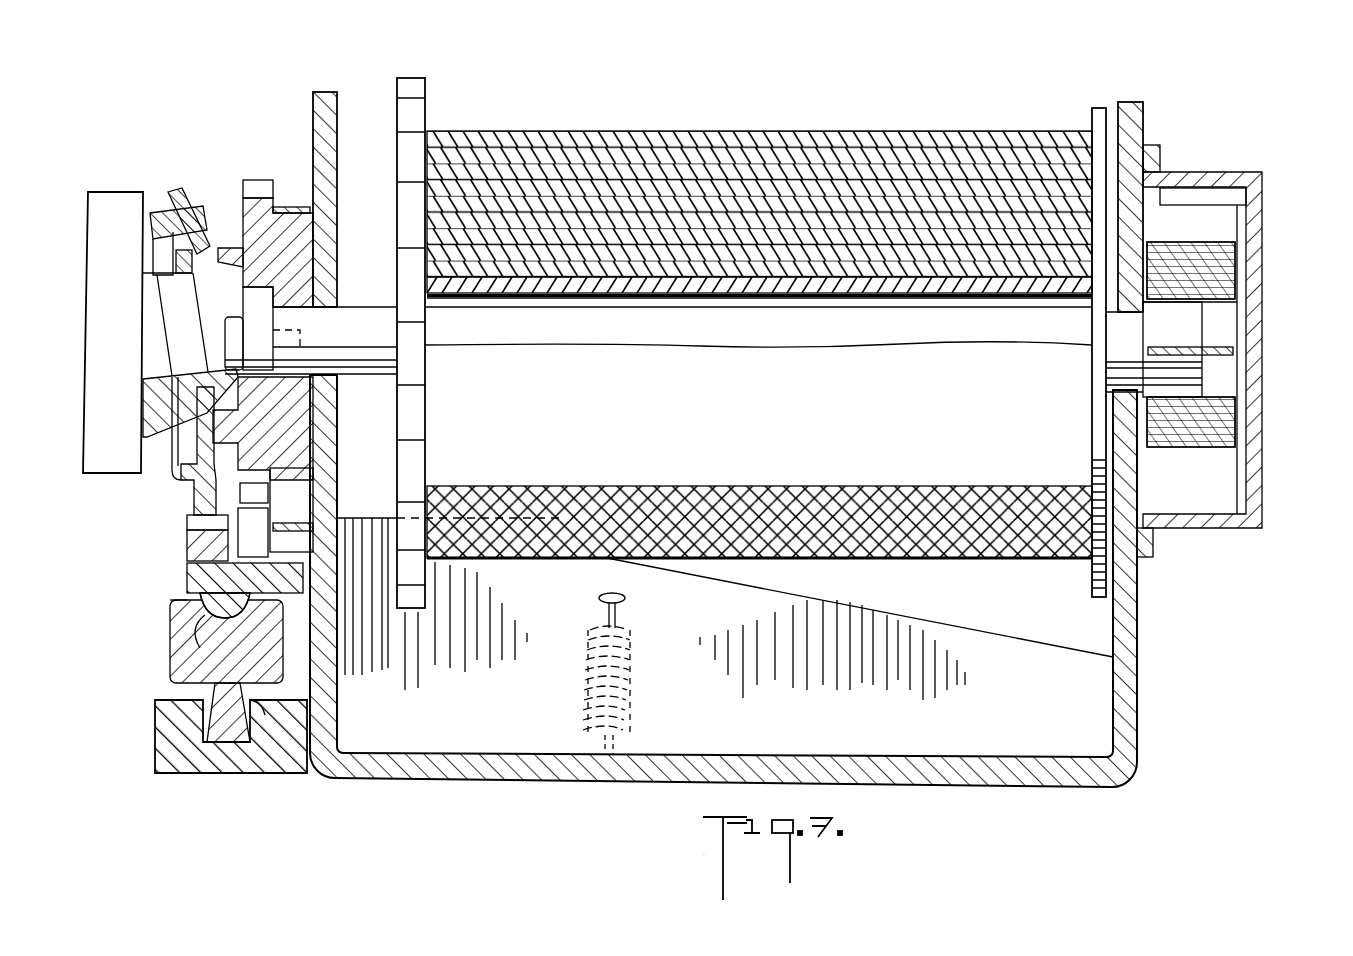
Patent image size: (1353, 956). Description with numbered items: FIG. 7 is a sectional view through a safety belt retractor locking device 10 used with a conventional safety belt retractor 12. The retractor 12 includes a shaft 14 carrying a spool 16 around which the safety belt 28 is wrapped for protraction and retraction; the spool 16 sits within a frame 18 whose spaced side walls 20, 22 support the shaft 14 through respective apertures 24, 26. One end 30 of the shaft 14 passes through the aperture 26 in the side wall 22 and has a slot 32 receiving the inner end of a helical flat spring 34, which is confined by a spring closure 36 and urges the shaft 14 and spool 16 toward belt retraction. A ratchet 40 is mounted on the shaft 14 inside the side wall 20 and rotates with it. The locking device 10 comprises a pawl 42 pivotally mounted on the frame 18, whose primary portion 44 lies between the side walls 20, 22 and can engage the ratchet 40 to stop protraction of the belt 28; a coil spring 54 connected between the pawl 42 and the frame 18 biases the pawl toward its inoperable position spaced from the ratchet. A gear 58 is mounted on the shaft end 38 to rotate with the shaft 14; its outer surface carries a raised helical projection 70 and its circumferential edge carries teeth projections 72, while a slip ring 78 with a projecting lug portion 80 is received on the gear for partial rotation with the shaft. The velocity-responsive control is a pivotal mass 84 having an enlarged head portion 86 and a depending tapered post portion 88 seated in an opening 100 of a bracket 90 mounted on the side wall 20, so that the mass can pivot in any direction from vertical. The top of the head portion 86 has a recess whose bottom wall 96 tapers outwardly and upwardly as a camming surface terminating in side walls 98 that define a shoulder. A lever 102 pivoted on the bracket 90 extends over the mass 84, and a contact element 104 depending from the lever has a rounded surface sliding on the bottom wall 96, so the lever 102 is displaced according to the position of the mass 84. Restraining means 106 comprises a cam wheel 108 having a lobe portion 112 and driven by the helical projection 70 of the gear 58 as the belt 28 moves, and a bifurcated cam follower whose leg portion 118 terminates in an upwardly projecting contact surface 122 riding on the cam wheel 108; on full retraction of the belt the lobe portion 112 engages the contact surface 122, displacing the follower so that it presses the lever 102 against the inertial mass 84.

The safety belt retractor locking device 10 is at (131, 276).
The safety belt retractor 12 is at (759, 186).
The shaft 14 is at (751, 335).
The spool 16 is at (782, 298).
The frame 18 is at (328, 86).
The side wall 20 is at (336, 100).
The side wall 22 is at (1146, 108).
The aperture 24 is at (328, 305).
The aperture 26 is at (1112, 316).
The safety belt 28 is at (710, 140).
The end of shaft 30 is at (1188, 322).
The slot 32 is at (1185, 355).
The helical flat spring 34 is at (1232, 270).
The spring closure 36 is at (1225, 172).
The shaft end 38 is at (362, 367).
The ratchet 40 is at (420, 112).
The pawl 42 is at (378, 735).
The primary portion 44 is at (440, 745).
The coil spring 54 is at (630, 688).
The gear 58 is at (243, 214).
The raised helical projection 70 is at (228, 265).
The teeth projections 72 is at (257, 180).
The slip ring 78 is at (280, 207).
The projecting lug portion 80 is at (298, 540).
The pivotal mass 84 is at (180, 638).
The head portion 86 is at (188, 656).
The post portion 88 is at (215, 690).
The bracket 90 is at (188, 782).
The bottom wall 96 is at (204, 640).
The side walls 98 is at (178, 598).
The opening 100 is at (274, 715).
The lever 102 is at (188, 580).
The contact element 104 is at (243, 617).
The restraining means 106 is at (108, 490).
The cam wheel 108 is at (190, 205).
The lobe portion 112 is at (198, 505).
The leg portion 118 is at (188, 546).
The contact surface 122 is at (188, 522).